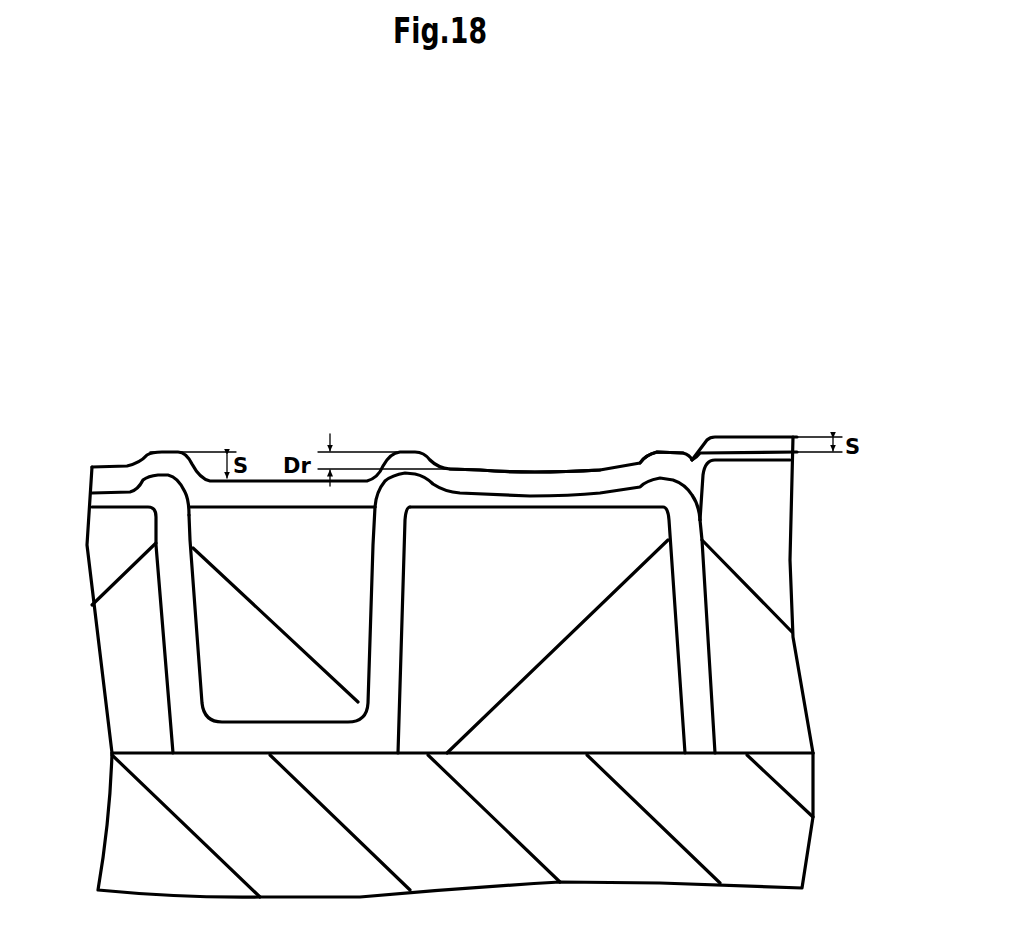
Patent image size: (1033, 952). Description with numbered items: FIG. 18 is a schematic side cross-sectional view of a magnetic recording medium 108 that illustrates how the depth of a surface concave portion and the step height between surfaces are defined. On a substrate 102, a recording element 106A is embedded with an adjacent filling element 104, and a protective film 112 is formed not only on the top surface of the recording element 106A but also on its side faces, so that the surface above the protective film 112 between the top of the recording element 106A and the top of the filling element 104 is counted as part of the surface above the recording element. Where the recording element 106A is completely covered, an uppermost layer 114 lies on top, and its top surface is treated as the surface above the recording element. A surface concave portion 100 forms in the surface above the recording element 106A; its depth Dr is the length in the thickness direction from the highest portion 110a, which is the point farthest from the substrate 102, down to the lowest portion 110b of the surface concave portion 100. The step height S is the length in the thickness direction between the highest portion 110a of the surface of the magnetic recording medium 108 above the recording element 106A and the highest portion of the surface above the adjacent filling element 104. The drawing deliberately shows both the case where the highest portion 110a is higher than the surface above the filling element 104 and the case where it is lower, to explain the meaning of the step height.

The surface concave portion 100 is at (112, 462).
The substrate 102 is at (810, 830).
The filling element 104 is at (260, 520).
The recording element 106A is at (90, 547).
The magnetic recording medium 108 is at (423, 347).
The highest portion 110a is at (662, 452).
The lowest portion 110b is at (538, 504).
The protective film 112 is at (703, 658).
The uppermost layer 114 is at (750, 447).